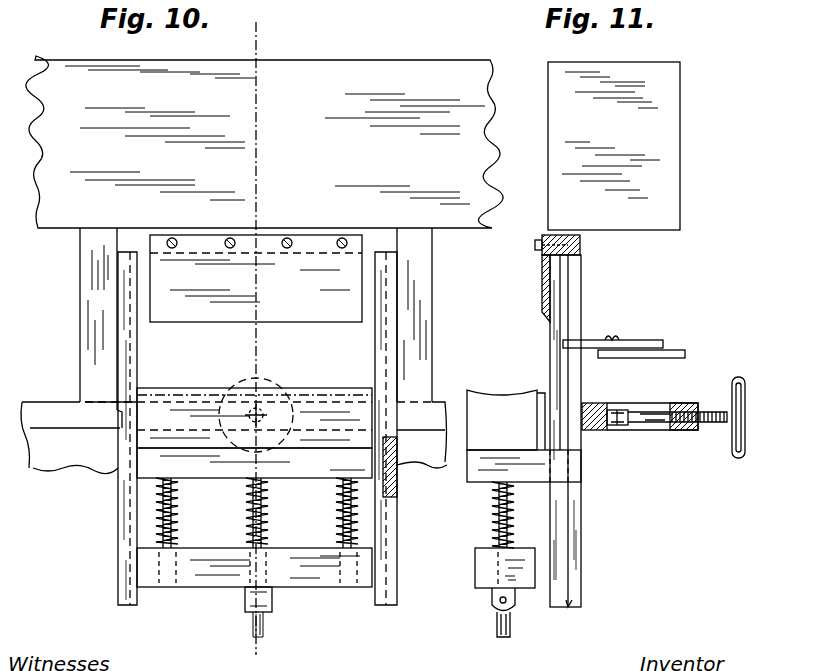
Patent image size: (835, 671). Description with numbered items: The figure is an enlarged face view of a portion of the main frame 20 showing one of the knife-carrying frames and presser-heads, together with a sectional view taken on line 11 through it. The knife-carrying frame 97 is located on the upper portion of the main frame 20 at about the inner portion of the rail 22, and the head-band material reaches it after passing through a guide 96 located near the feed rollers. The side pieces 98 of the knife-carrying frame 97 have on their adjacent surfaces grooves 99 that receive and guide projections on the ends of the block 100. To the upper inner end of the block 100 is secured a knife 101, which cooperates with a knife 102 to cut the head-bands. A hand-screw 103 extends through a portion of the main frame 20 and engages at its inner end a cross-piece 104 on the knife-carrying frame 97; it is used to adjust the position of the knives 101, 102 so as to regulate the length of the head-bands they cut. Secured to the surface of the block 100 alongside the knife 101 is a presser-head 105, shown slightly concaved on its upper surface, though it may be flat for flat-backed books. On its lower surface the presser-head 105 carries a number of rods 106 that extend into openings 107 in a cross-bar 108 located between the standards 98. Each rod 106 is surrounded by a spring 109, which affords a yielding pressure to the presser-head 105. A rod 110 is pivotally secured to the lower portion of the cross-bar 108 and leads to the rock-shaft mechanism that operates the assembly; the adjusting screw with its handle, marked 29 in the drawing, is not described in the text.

In FIG. 10, the section line 11 is at (248, 653).
In FIG. 10, the main frame 20 is at (96, 339).
In FIG. 10, the rail 22 is at (264, 142).
In FIG. 11, the rail 22 is at (614, 146).
In FIG. 11, the adjusting screw rod with handle 29 is at (655, 408).
In FIG. 11, the guide 96 is at (642, 341).
In FIG. 10, the knife-carrying frame 97 is at (237, 319).
In FIG. 11, the knife-carrying frame 97 is at (607, 502).
In FIG. 10, the side pieces 98 is at (131, 372).
In FIG. 11, the side pieces 98 is at (575, 298).
In FIG. 10, the grooves 99 is at (397, 491).
In FIG. 11, the grooves 99 is at (569, 606).
In FIG. 10, the block 100 is at (254, 463).
In FIG. 11, the block 100 is at (524, 466).
In FIG. 10, the knife 101 is at (312, 388).
In FIG. 11, the knife 101 is at (540, 420).
In FIG. 10, the knife 102 is at (256, 278).
In FIG. 11, the knife 102 is at (545, 283).
In FIG. 10, the hand-screw 103 is at (262, 385).
In FIG. 11, the hand-screw 103 is at (668, 427).
In FIG. 11, the cross-piece 104 is at (595, 408).
In FIG. 11, the presser-head 105 is at (500, 392).
In FIG. 10, the rods 106 is at (347, 527).
In FIG. 11, the rods 106 is at (498, 535).
In FIG. 10, the openings 107 is at (342, 582).
In FIG. 10, the cross-bar 108 is at (222, 580).
In FIG. 11, the cross-bar 108 is at (505, 568).
In FIG. 10, the spring 109 is at (179, 533).
In FIG. 11, the spring 109 is at (493, 512).
In FIG. 10, the rod 110 is at (267, 628).
In FIG. 11, the rod 110 is at (498, 622).